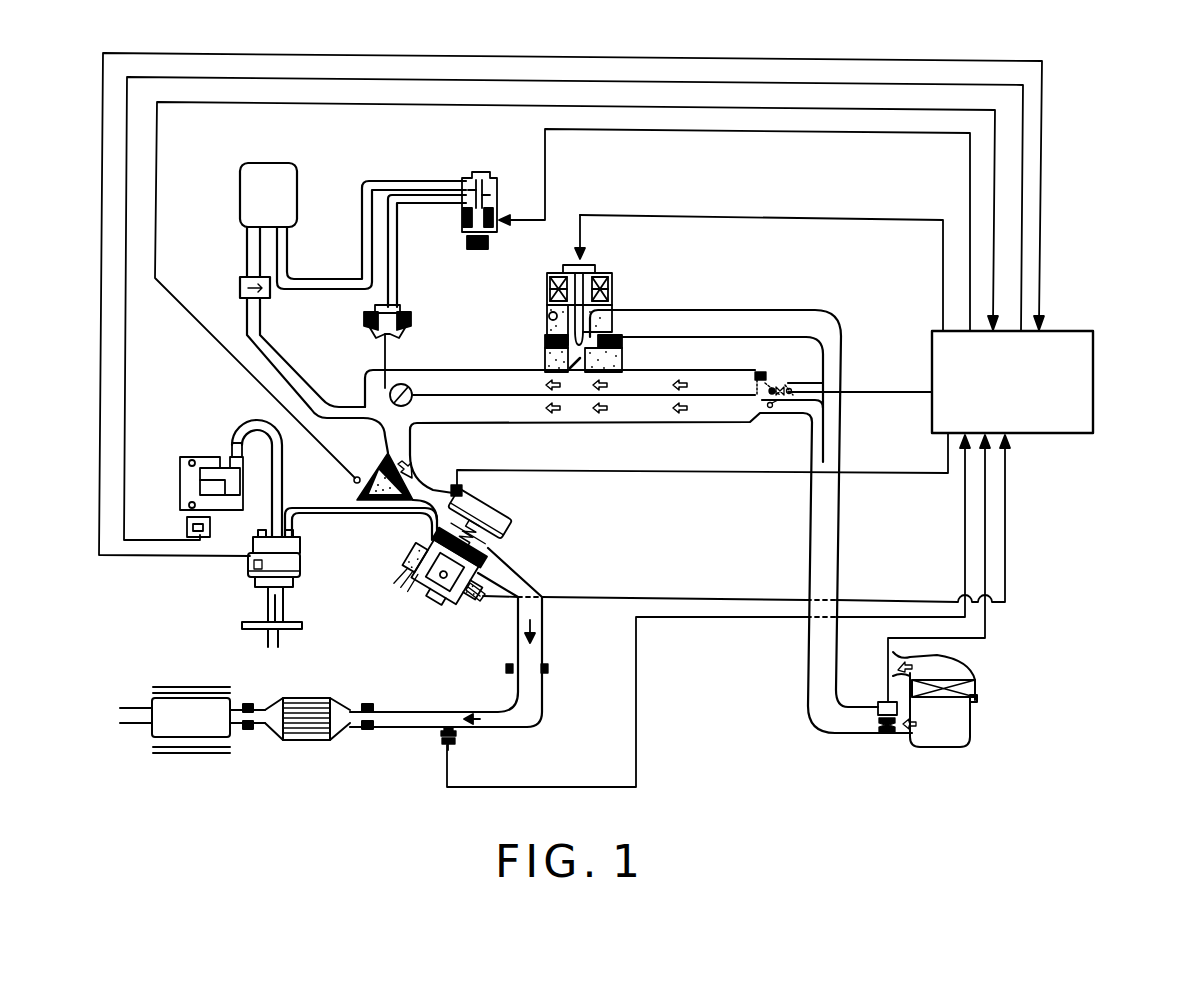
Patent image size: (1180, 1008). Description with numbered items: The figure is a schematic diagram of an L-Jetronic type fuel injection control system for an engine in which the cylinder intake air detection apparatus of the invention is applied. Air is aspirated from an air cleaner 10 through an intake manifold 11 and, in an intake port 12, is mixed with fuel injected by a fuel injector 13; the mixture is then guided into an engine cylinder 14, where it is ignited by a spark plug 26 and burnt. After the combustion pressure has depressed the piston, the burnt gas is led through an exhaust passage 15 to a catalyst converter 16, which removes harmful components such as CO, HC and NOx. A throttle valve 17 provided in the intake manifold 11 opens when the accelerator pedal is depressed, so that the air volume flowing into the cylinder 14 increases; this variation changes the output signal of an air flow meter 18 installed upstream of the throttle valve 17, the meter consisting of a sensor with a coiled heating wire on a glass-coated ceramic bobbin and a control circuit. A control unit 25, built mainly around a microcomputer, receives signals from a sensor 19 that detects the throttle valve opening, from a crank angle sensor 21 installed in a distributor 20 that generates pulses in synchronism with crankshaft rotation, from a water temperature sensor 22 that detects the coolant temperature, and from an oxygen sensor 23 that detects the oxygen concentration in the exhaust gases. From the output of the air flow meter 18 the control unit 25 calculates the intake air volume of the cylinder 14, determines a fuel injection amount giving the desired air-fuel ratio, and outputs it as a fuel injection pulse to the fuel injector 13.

The air cleaner 10 is at (978, 688).
The intake manifold 11 is at (807, 677).
The intake port 12 is at (425, 490).
The fuel injector 13 is at (462, 488).
The engine cylinder 14 is at (430, 546).
The exhaust passage 15 is at (530, 709).
The catalyst converter 16 is at (330, 702).
The throttle valve 17 is at (778, 392).
The air flow meter 18 is at (892, 737).
The sensor for detecting throttle valve opening 19 is at (790, 387).
The distributor 20 is at (255, 588).
The crank angle sensor 21 is at (248, 560).
The water temperature sensor 22 is at (354, 480).
The oxygen sensor 23 is at (447, 747).
The control unit 25 is at (1095, 345).
The spark plug 26 is at (433, 542).